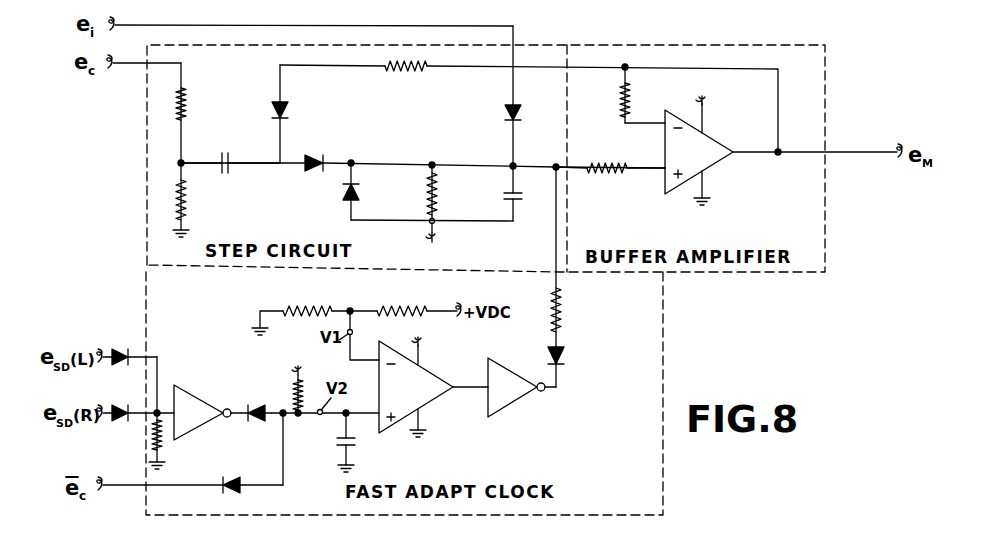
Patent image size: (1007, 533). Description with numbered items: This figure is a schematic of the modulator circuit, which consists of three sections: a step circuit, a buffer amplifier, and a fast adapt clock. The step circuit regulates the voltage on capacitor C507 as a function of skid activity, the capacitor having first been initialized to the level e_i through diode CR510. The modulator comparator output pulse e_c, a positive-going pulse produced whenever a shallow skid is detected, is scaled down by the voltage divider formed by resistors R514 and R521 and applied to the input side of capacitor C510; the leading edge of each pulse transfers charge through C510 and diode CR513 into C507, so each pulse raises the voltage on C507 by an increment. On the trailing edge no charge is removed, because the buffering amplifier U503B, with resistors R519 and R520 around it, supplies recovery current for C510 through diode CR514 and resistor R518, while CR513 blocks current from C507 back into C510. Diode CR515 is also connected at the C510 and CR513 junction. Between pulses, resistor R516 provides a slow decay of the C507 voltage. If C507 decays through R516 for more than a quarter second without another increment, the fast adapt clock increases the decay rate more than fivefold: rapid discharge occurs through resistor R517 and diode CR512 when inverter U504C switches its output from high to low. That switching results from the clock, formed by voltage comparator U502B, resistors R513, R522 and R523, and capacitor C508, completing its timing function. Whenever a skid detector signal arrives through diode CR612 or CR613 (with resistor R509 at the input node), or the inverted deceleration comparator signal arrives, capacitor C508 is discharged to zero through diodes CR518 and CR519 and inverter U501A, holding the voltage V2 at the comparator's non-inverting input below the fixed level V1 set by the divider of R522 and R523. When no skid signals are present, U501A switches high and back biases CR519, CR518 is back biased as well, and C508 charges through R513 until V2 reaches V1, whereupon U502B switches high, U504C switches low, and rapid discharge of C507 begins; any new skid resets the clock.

The resistor R514 is at (204, 113).
The capacitor C510 is at (230, 152).
The resistor R521 is at (203, 200).
The diode CR514 is at (311, 114).
The resistor R518 is at (407, 79).
The diode CR513 is at (335, 151).
The diode CR515 is at (324, 191).
The resistor R516 is at (421, 215).
The diode CR510 is at (481, 96).
The capacitor C507 is at (490, 193).
The resistor R519 is at (610, 155).
The resistor R520 is at (618, 95).
The buffering amplifier U503B is at (698, 139).
The diode CR612 is at (124, 345).
The diode CR613 is at (124, 398).
The resistor R509 is at (136, 441).
The inverter U501A is at (202, 403).
The diode CR519 is at (252, 426).
The resistor R513 is at (283, 380).
The diode CR518 is at (235, 475).
The capacitor C508 is at (370, 442).
The resistor R522 is at (307, 296).
The resistor R523 is at (402, 296).
The voltage comparator U502B is at (420, 386).
The inverter U504C is at (531, 390).
The resistor R517 is at (580, 257).
The diode CR512 is at (586, 367).